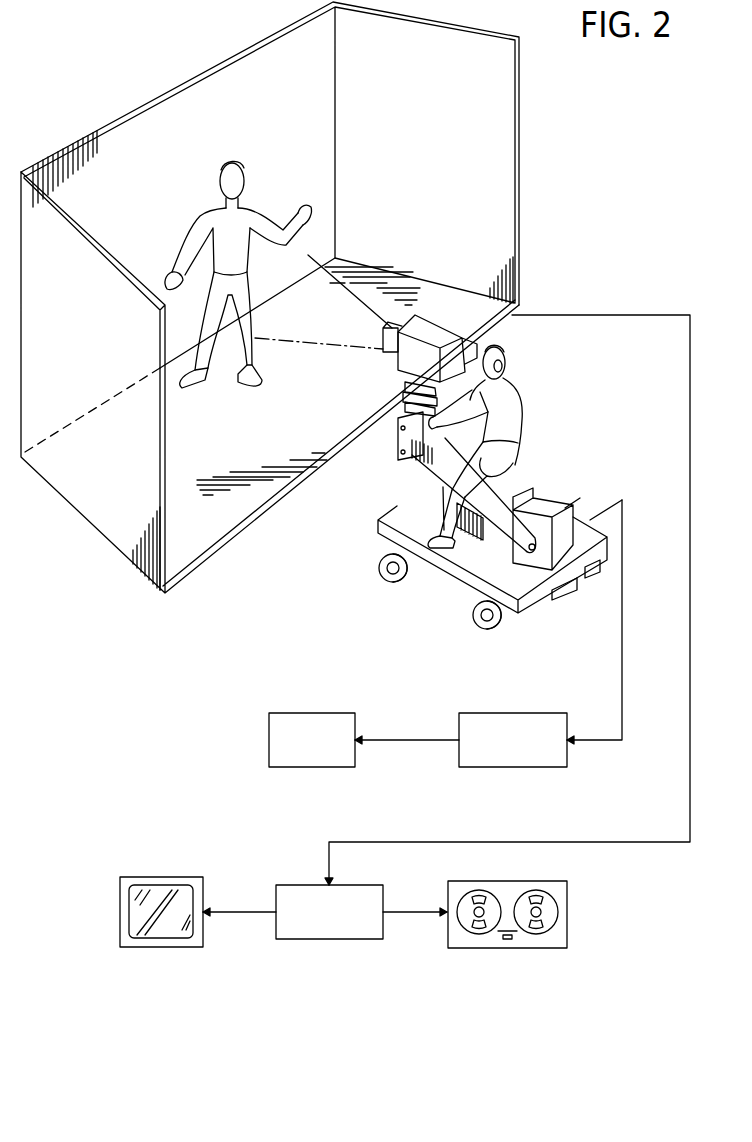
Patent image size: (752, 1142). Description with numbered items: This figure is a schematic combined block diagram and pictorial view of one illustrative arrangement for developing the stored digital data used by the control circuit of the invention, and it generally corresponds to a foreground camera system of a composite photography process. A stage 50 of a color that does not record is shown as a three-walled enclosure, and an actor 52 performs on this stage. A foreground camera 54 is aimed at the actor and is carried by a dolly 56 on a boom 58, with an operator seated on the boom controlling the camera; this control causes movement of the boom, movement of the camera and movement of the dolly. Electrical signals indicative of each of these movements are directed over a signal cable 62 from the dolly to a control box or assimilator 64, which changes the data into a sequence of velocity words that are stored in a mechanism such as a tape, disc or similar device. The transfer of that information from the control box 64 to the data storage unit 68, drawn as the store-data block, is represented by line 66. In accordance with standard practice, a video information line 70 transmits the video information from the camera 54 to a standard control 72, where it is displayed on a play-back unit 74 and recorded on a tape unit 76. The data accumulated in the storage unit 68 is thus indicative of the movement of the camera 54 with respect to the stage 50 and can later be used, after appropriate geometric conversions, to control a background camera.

The stage 50 is at (205, 88).
The actor 52 is at (258, 208).
The foreground camera 54 is at (432, 318).
The dolly 56 is at (578, 546).
The boom 58 is at (527, 478).
The cable from dolly to control box 62 is at (622, 656).
The control box or assimilator 64 is at (508, 713).
The line 66 is at (405, 741).
The data storage unit 68 is at (308, 768).
The video information line 70 is at (687, 695).
The standard control 72 is at (343, 941).
The display unit 74 is at (158, 888).
The tape unit 76 is at (560, 930).